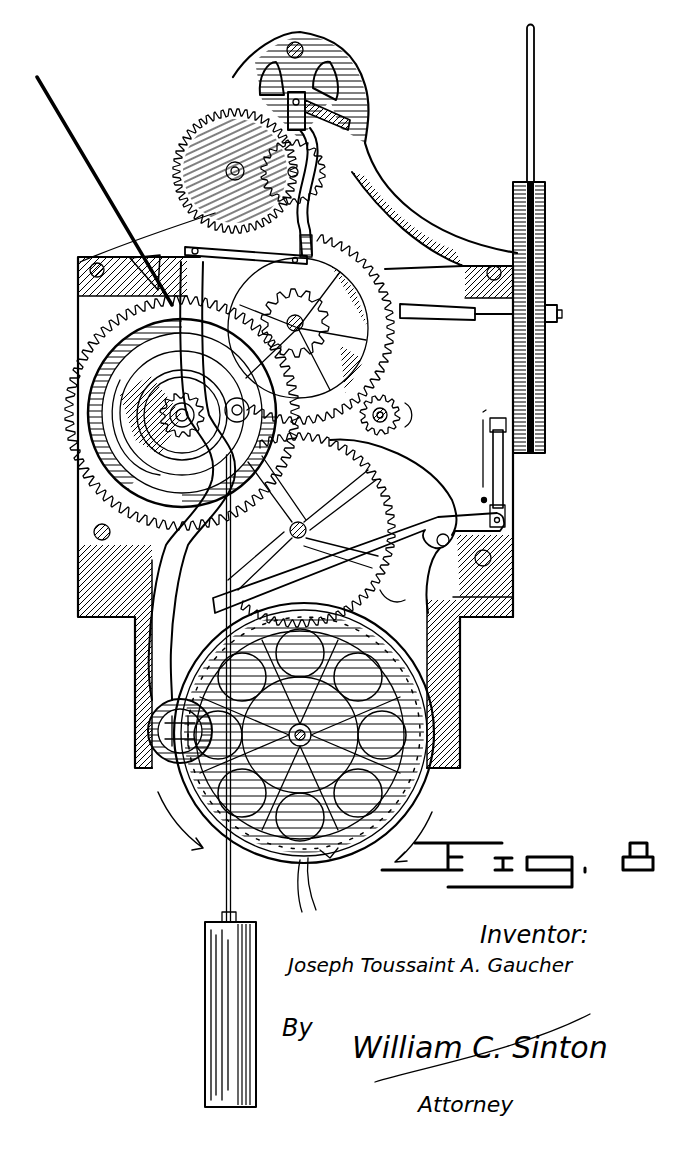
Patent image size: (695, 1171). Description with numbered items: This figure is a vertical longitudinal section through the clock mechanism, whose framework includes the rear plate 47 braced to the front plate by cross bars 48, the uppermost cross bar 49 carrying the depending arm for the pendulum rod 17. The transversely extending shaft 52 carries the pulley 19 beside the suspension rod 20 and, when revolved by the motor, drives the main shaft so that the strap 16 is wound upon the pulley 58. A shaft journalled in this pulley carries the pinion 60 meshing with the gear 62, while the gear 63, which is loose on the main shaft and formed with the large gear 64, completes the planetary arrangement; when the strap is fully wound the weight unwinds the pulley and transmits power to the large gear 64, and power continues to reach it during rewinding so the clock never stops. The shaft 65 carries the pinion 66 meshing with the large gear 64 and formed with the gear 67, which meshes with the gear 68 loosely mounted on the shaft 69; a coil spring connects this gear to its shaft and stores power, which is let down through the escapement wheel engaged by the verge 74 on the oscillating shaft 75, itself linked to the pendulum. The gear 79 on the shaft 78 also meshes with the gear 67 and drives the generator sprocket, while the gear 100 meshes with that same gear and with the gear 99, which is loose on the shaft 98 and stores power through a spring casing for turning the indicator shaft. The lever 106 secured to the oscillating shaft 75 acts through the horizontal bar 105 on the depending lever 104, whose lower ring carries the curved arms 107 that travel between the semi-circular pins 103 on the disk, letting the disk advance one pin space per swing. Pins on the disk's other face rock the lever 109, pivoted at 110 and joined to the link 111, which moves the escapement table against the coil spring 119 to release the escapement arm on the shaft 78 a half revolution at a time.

The strap 16 is at (225, 888).
The pendulum rod 17 is at (65, 105).
The pulley 19 is at (547, 220).
The suspension rod 20 is at (536, 108).
The rear plate 47 is at (518, 566).
The cross bars 48 is at (90, 270).
The uppermost cross bar 49 is at (300, 45).
The transversely extending shaft 52 is at (452, 322).
The pulley 58 is at (98, 480).
The pinion 60 is at (325, 342).
The gear 62 is at (63, 447).
The gear 63 is at (237, 410).
The large gear 64 is at (73, 407).
The shaft 65 is at (352, 290).
The pinion 66 is at (318, 315).
The gear 67 is at (368, 255).
The gear 68 is at (198, 155).
The shaft 69 is at (222, 120).
The verge 74 is at (330, 107).
The oscillating shaft 75 is at (340, 85).
The shaft 78 is at (400, 410).
The gear 79 is at (342, 530).
The shaft 98 is at (350, 872).
The gear 99 is at (395, 684).
The gear 100 is at (397, 606).
The pins 103 is at (432, 790).
The depending lever 104 is at (155, 637).
The horizontal bar 105 is at (195, 230).
The lever 106 is at (360, 145).
The curved arms 107 is at (150, 733).
The lever 109 is at (358, 563).
The pivot 110 is at (515, 612).
The link 111 is at (500, 488).
The coil spring 119 is at (505, 418).